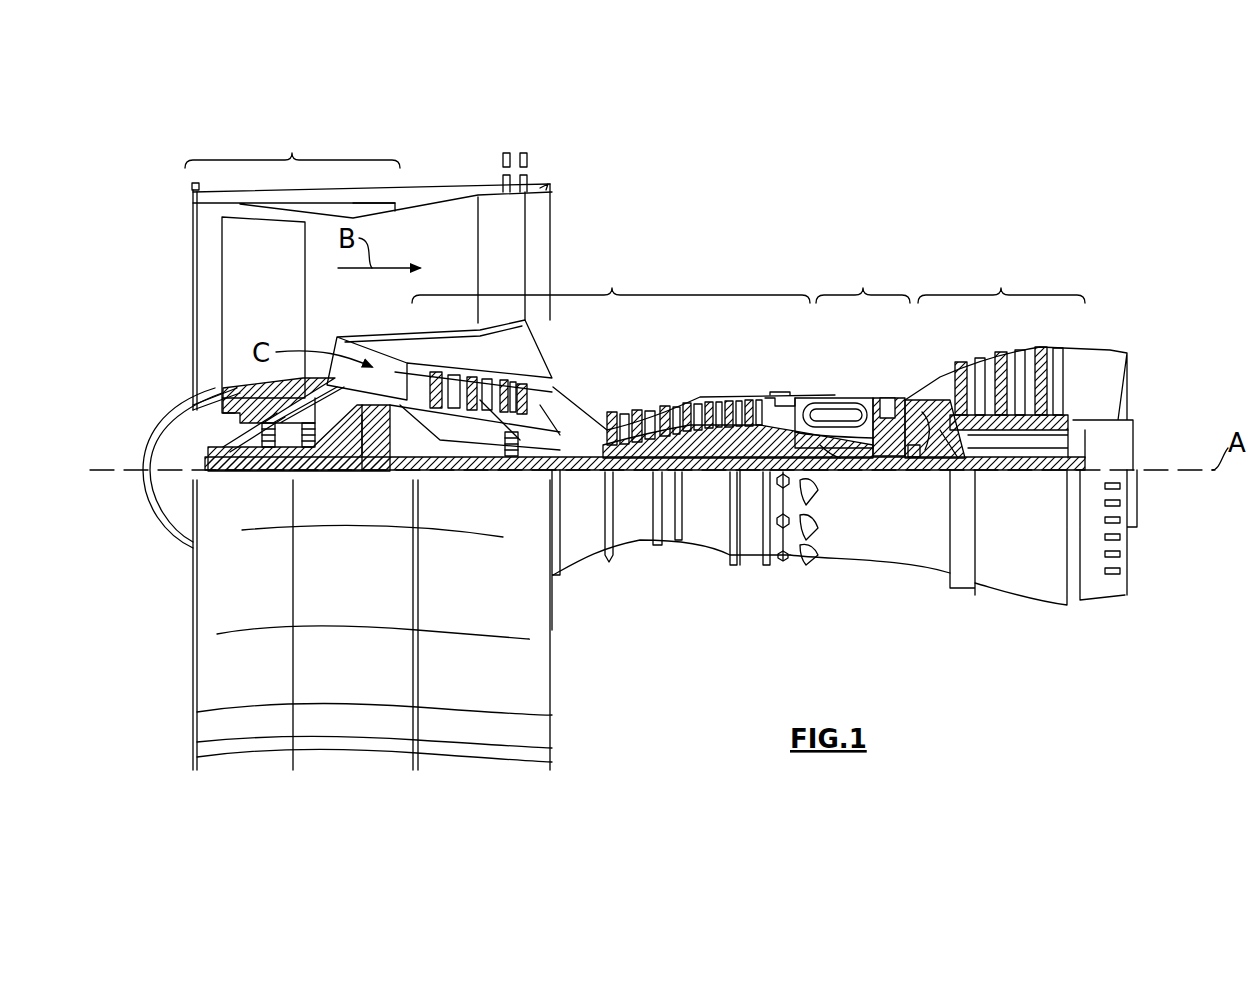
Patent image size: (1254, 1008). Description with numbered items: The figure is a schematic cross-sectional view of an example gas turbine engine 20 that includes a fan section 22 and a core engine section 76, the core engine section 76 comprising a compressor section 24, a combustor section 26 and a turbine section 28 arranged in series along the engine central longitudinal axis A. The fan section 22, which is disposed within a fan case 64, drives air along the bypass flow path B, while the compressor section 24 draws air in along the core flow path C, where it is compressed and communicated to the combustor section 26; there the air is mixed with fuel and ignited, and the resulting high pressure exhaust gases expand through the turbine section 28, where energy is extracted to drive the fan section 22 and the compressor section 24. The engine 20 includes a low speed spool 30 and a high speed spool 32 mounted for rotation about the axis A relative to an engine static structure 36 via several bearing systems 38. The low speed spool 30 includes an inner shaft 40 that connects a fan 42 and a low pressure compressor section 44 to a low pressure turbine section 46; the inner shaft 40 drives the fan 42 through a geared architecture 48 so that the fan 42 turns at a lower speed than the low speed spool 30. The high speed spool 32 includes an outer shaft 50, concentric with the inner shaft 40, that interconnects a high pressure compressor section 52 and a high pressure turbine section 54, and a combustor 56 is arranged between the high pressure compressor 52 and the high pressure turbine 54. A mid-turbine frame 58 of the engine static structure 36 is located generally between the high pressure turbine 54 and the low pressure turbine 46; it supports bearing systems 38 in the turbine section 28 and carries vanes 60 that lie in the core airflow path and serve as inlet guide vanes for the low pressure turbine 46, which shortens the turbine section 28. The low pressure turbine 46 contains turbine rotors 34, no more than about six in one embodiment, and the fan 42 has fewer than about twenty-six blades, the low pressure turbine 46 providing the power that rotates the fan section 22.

The gas turbine engine 20 is at (832, 238).
The fan section 22 is at (292, 146).
The compressor section 24 is at (611, 281).
The combustor section 26 is at (863, 281).
The turbine section 28 is at (1001, 281).
The low speed spool 30 is at (707, 480).
The high speed spool 32 is at (744, 437).
The turbine rotors 34 is at (1045, 470).
The engine static structure 36 is at (748, 560).
The bearing systems 38 is at (268, 455).
The inner shaft 40 is at (573, 473).
The fan 42 is at (263, 315).
The low pressure compressor section 44 is at (488, 373).
The low pressure turbine section 46 is at (1012, 356).
The geared architecture 48 is at (378, 455).
The outer shaft 50 is at (830, 465).
The high pressure compressor section 52 is at (686, 445).
The high pressure turbine section 54 is at (885, 396).
The combustor 56 is at (820, 410).
The mid-turbine frame 58 is at (930, 378).
The vanes 60 is at (968, 470).
The fan case 64 is at (405, 193).
The core engine section 76 is at (710, 355).